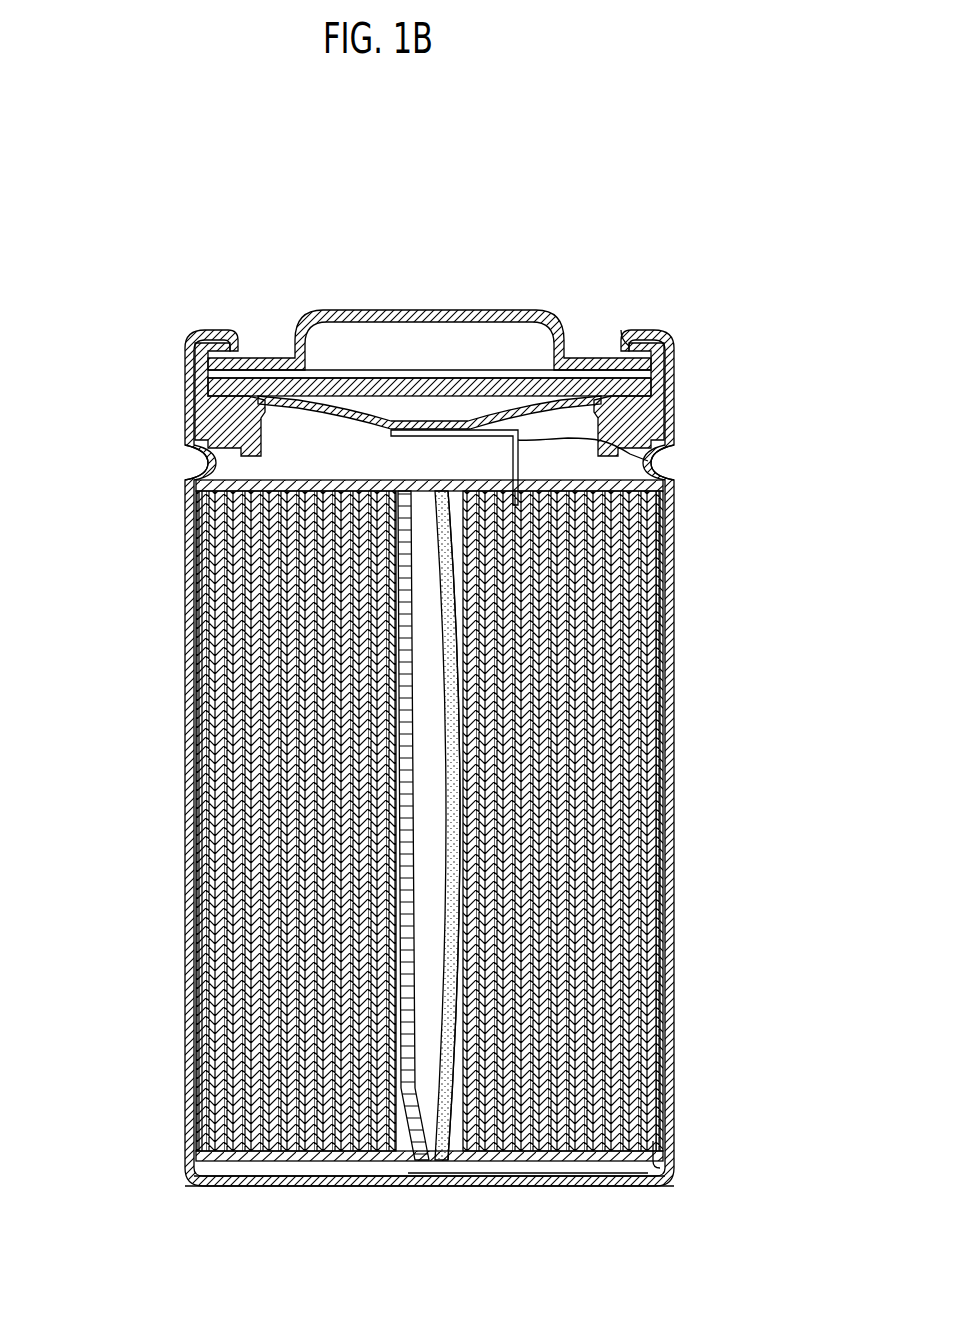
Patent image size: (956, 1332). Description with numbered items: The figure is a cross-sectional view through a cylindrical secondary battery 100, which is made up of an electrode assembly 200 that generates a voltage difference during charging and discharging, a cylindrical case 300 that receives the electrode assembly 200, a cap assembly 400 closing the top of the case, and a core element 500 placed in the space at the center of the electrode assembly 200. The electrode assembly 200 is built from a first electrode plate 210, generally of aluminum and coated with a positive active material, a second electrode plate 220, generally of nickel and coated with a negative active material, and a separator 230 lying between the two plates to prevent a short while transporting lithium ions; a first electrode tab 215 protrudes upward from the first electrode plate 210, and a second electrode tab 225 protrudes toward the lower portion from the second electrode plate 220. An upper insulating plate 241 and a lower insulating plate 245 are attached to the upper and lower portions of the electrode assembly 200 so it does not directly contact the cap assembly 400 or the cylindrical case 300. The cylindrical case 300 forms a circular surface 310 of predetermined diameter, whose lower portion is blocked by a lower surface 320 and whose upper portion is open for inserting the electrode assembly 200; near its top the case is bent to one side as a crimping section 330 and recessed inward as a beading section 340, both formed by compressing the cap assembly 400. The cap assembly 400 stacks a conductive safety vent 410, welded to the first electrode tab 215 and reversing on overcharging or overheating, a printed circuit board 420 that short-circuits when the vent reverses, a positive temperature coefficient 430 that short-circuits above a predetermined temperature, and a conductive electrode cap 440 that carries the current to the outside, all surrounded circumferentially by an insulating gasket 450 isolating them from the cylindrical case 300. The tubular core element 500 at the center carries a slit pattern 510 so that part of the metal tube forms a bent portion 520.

The cylindrical secondary battery 100 is at (717, 281).
The electrode assembly 200 is at (767, 750).
The first electrode plate 210 is at (612, 637).
The first electrode tab 215 is at (640, 453).
The second electrode plate 220 is at (652, 540).
The second electrode tab 225 is at (545, 1167).
The separator 230 is at (652, 595).
The upper insulating plate 241 is at (650, 467).
The lower insulating plate 245 is at (652, 1160).
The cylindrical case 300 is at (80, 385).
The circular surface 310 is at (184, 522).
The lower surface 320 is at (227, 1178).
The crimping section 330 is at (178, 331).
The beading section 340 is at (186, 453).
The cap assembly 400 is at (588, 200).
The conductive safety vent 410 is at (385, 412).
The printed circuit board 420 is at (463, 376).
The positive temperature coefficient 430 is at (500, 362).
The conductive electrode cap 440 is at (333, 300).
The insulating gasket 450 is at (633, 325).
The core element 500 is at (406, 1153).
The slit pattern 510 is at (433, 1153).
The bent portion 520 is at (445, 1085).